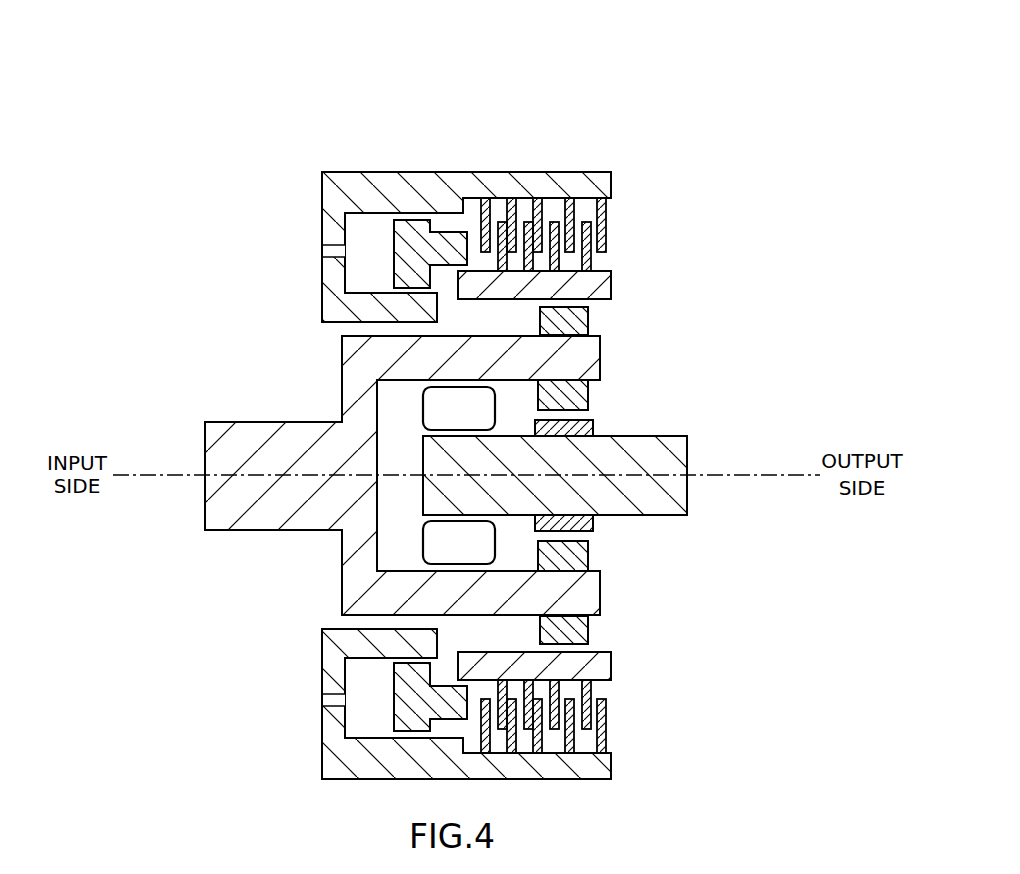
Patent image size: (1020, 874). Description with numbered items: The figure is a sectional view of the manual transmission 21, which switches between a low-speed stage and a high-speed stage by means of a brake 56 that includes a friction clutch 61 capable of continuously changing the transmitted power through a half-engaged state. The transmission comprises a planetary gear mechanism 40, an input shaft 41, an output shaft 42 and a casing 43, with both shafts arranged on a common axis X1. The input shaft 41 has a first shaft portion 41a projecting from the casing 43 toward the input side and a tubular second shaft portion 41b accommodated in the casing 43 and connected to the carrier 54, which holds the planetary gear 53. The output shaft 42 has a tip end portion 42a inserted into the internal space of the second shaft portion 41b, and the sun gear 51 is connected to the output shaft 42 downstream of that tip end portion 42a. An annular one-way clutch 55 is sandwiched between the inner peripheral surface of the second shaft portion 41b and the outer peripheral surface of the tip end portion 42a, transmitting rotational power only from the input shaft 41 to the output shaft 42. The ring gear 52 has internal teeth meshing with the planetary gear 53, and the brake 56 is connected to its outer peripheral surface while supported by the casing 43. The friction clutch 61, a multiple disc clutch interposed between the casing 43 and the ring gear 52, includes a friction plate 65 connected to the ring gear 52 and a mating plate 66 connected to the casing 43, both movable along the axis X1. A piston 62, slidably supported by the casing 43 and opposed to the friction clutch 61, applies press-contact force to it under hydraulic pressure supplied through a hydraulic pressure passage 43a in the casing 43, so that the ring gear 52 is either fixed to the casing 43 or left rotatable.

The manual transmission 21 is at (467, 401).
The planetary gear mechanism 40 is at (452, 475).
The input shaft 41 is at (423, 473).
The first shaft portion 41a is at (270, 422).
The second shaft portion 41b is at (342, 358).
The output shaft 42 is at (510, 490).
The tip end portion 42a is at (433, 502).
The casing 43 is at (426, 475).
The hydraulic pressure passage 43a is at (335, 252).
The sun gear 51 is at (593, 427).
The ring gear 52 is at (611, 287).
The planetary gear 53 is at (588, 320).
The carrier 54 is at (600, 363).
The one-way clutch 55 is at (423, 411).
The brake 56 is at (508, 388).
The friction clutch 61 is at (554, 410).
The piston 62 is at (409, 228).
The friction plate 65 is at (584, 222).
The mating plate 66 is at (565, 212).
The axis X1 is at (757, 480).